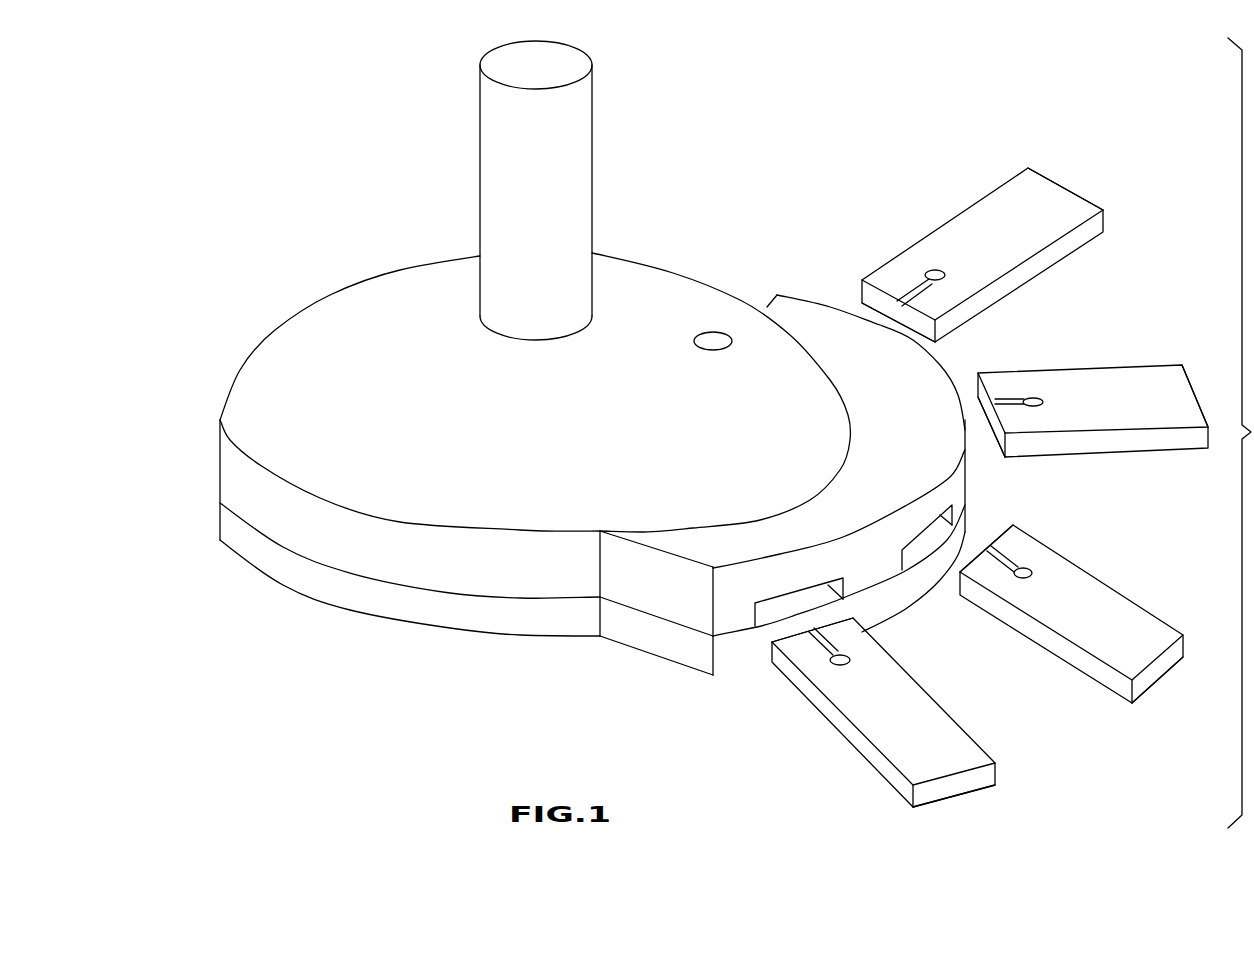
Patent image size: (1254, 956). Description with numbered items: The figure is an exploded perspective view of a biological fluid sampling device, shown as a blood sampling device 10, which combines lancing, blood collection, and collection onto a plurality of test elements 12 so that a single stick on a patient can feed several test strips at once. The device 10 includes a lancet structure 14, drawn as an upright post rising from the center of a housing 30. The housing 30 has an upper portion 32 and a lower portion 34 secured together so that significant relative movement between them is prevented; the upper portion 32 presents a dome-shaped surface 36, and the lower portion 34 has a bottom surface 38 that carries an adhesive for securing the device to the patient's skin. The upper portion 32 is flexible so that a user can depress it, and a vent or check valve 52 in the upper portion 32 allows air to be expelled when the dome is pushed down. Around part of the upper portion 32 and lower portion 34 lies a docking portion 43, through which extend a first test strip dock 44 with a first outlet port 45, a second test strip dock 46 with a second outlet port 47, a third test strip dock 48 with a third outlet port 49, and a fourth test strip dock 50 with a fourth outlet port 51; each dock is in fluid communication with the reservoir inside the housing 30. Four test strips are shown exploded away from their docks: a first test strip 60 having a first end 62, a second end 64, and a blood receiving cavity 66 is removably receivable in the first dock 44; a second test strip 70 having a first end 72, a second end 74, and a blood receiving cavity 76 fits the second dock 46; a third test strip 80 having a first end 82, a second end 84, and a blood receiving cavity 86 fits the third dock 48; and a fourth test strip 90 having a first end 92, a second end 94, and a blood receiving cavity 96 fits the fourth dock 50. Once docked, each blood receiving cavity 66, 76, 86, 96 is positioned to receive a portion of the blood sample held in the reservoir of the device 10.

The blood sampling device 10 is at (728, 156).
The test elements 12 is at (988, 479).
The lancet structure 14 is at (478, 177).
The housing 30 is at (220, 503).
The upper portion 32 is at (219, 417).
The lower portion 34 is at (230, 548).
The dome-shaped surface 36 is at (381, 413).
The bottom surface 38 is at (423, 633).
The docking portion 43 is at (876, 443).
The first test strip dock 44 is at (860, 325).
The first outlet port 45 is at (833, 305).
The second test strip dock 46 is at (1005, 426).
The second outlet port 47 is at (963, 388).
The third test strip dock 48 is at (959, 594).
The third outlet port 49 is at (930, 558).
The fourth test strip dock 50 is at (761, 660).
The fourth outlet port 51 is at (768, 620).
The vent or check valve 52 is at (707, 330).
The first test strip 60 is at (963, 212).
The first end 62 is at (917, 312).
The second end 64 is at (1067, 185).
The blood receiving cavity 66 is at (905, 287).
The second test strip 70 is at (1142, 363).
The first end 72 is at (1003, 420).
The second end 74 is at (1190, 380).
The blood receiving cavity 76 is at (1007, 400).
The third test strip 80 is at (1120, 593).
The first end 82 is at (998, 538).
The second end 84 is at (1157, 680).
The blood receiving cavity 86 is at (1005, 553).
The fourth test strip 90 is at (862, 758).
The first end 92 is at (790, 640).
The second end 94 is at (953, 797).
The blood receiving cavity 96 is at (832, 645).